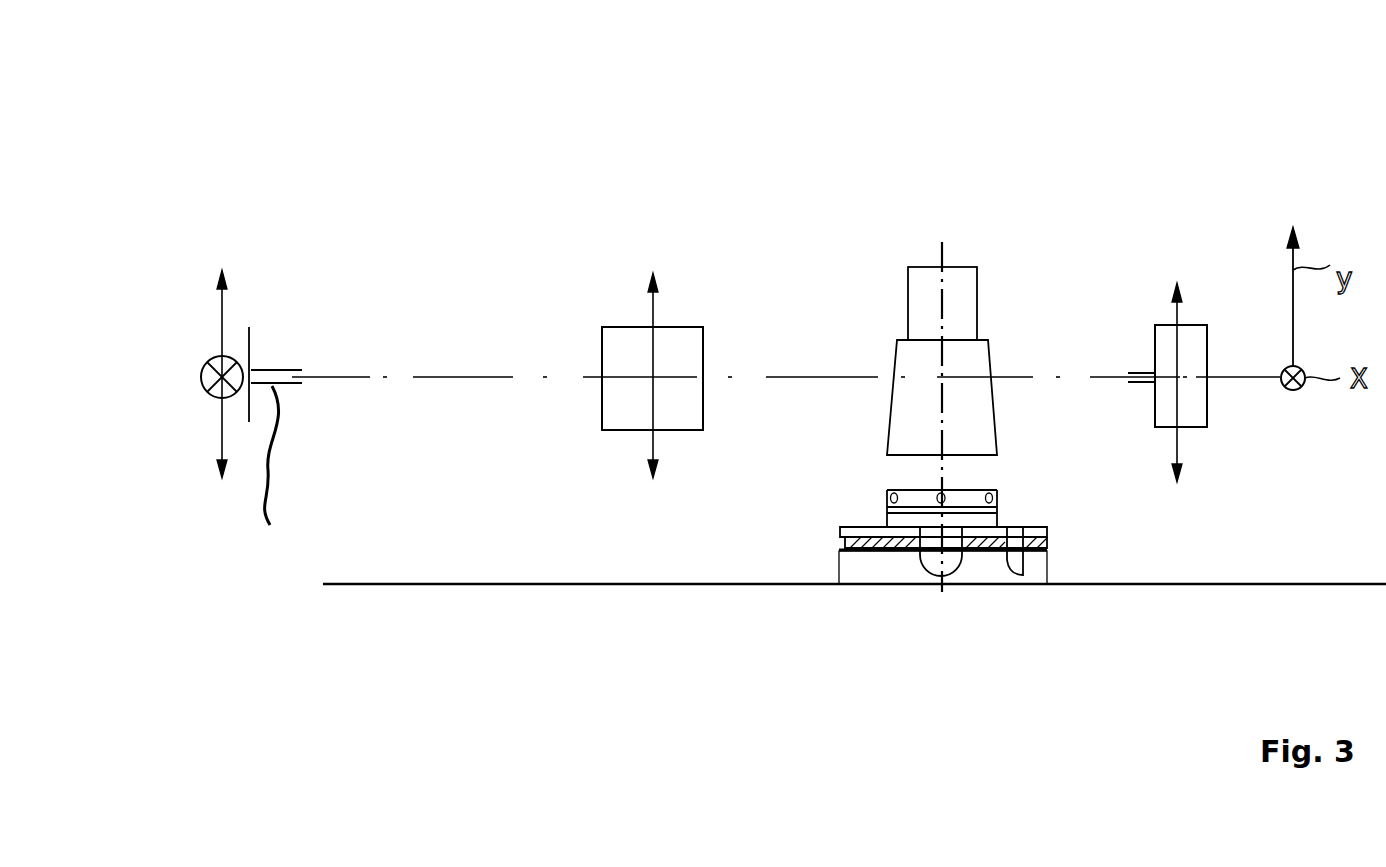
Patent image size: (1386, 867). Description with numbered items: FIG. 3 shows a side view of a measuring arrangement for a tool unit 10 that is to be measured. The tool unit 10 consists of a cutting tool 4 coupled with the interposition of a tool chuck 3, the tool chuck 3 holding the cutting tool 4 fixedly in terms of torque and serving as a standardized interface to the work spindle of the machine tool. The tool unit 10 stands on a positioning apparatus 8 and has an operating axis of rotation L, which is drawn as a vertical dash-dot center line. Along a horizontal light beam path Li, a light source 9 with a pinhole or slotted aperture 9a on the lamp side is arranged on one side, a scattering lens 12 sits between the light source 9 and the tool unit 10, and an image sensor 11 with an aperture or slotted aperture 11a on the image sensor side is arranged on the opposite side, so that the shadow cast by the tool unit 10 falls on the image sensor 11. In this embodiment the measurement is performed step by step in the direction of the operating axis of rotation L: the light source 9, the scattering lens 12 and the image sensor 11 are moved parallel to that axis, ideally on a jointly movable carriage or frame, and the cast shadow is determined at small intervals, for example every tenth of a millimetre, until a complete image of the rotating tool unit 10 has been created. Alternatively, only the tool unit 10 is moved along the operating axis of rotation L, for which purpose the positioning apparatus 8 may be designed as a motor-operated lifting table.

The tool chuck 3 is at (897, 360).
The cutting tool 4 is at (920, 289).
The positioning apparatus 8 is at (832, 584).
The light source 9 is at (205, 390).
The pinhole or slotted aperture 9a is at (275, 368).
The tool unit to be measured 10 is at (1003, 352).
The image sensor 11 is at (1185, 338).
The aperture or slotted aperture 11a is at (1113, 455).
The scattering lens 12 is at (682, 336).
The operating axis of rotation of the tool unit L is at (942, 250).
The light beam path Li is at (468, 380).